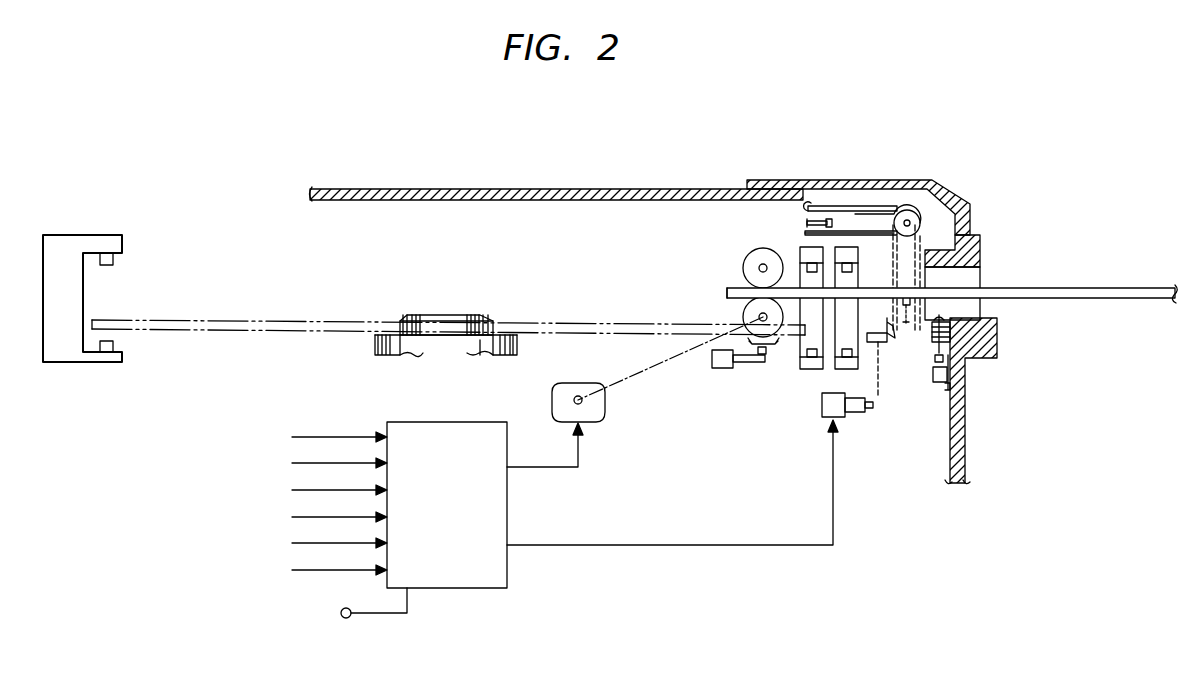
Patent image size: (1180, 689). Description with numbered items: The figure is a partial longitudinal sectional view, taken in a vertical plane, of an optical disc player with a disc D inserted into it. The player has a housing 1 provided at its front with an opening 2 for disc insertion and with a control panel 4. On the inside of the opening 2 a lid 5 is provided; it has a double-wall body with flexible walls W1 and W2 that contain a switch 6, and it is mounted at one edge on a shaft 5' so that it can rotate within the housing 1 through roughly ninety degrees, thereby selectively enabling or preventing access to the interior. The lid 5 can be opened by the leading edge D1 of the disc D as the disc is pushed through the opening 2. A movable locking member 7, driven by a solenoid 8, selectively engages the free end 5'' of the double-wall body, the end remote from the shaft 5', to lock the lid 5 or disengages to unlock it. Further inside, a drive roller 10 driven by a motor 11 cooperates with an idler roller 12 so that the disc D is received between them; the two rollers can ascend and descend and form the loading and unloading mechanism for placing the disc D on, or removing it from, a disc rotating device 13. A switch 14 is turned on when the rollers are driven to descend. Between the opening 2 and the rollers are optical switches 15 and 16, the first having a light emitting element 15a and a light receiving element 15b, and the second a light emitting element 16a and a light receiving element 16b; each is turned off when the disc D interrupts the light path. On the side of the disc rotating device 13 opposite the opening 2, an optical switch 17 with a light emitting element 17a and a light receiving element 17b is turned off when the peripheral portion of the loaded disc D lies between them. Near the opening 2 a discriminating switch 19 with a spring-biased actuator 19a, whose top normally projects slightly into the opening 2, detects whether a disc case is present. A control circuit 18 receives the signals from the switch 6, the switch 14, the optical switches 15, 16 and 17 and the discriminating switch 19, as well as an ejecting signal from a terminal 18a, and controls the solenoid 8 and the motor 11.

The housing 1 is at (573, 188).
The opening 2 is at (978, 277).
The control panel 4 is at (955, 201).
The lid 5 is at (851, 238).
The shaft 5' is at (919, 182).
The free end of the double-wall body 5'' is at (867, 271).
The switch 6 is at (805, 222).
The movable locking member 7 is at (895, 338).
The solenoid 8 is at (823, 408).
The drive roller 10 is at (744, 317).
The motor 11 is at (553, 398).
The idler roller 12 is at (745, 267).
The disc rotating device 13 is at (373, 347).
The switch 14 is at (718, 368).
The optical switch 15 is at (838, 376).
The light emitting element 15a is at (848, 262).
The light receiving element 15b is at (880, 344).
The optical switch 16 is at (806, 375).
The light emitting element 16a is at (805, 264).
The light receiving element 16b is at (802, 358).
The optical switch 17 is at (64, 353).
The light emitting element 17a is at (118, 258).
The light receiving element 17b is at (116, 346).
The control circuit 18 is at (474, 422).
The terminal 18a is at (347, 620).
The discriminating switch 19 is at (945, 377).
The actuator 19a is at (945, 312).
The disc D is at (1138, 290).
The leading edge D1 is at (725, 288).
The flexible wall W1 is at (862, 213).
The flexible wall W2 is at (870, 232).